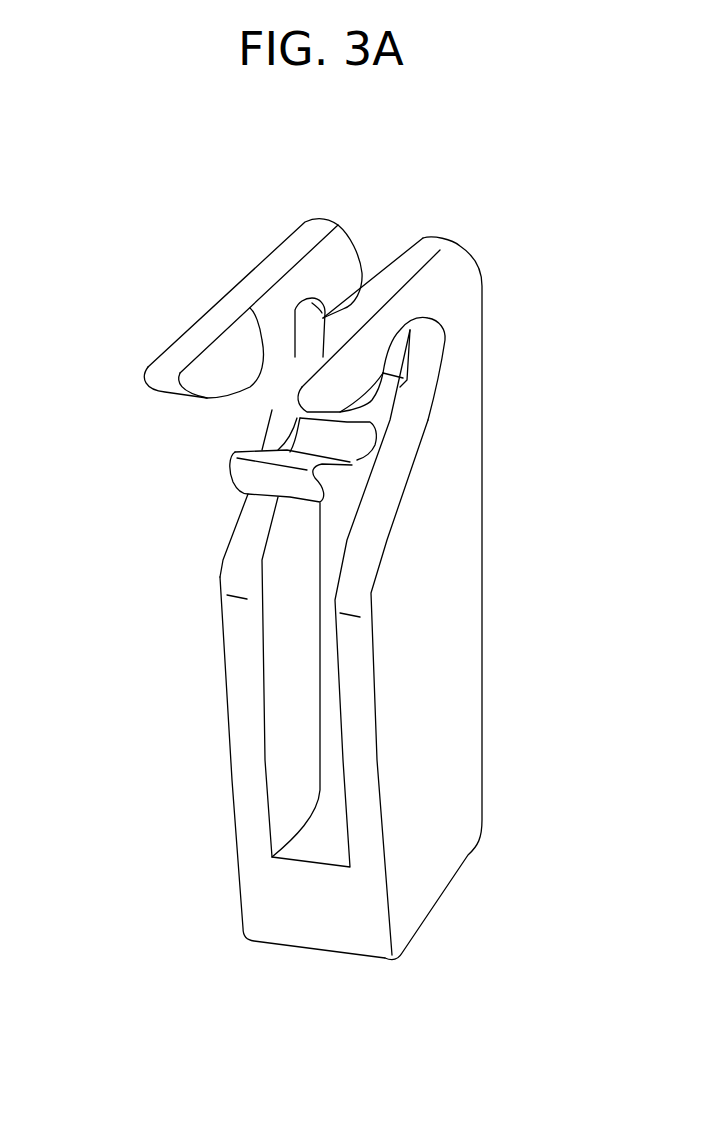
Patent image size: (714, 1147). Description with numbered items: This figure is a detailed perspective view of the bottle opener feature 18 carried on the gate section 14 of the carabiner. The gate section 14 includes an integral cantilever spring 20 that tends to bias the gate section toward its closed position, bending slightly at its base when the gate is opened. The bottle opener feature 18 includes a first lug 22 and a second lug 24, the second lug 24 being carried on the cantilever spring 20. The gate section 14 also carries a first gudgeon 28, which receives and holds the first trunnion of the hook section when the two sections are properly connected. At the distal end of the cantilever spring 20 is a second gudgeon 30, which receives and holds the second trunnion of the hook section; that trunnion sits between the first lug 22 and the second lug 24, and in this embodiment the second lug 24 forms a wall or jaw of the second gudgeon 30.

The gate section 14 is at (468, 746).
The bottle opener feature 18 is at (176, 423).
The cantilever spring 20 is at (333, 530).
The first lug 22 is at (292, 390).
The second lug 24 is at (252, 477).
The first gudgeon 28 is at (362, 293).
The second gudgeon 30 is at (358, 438).